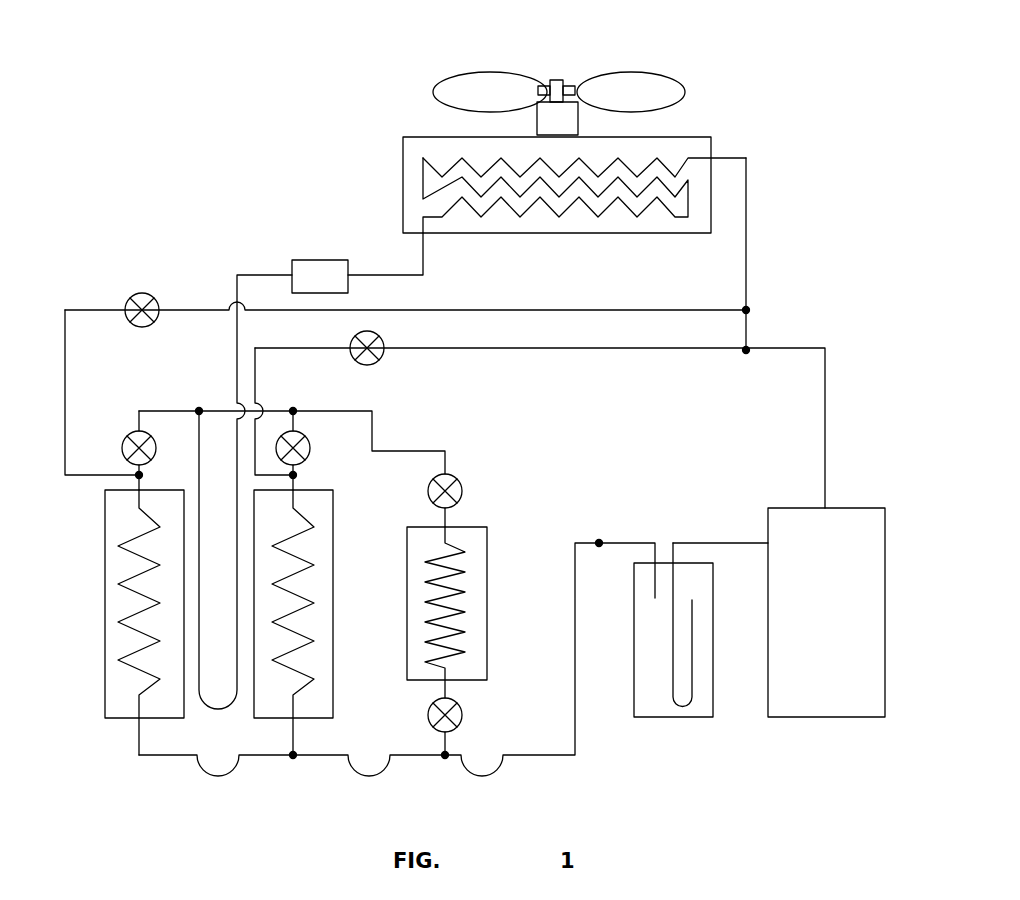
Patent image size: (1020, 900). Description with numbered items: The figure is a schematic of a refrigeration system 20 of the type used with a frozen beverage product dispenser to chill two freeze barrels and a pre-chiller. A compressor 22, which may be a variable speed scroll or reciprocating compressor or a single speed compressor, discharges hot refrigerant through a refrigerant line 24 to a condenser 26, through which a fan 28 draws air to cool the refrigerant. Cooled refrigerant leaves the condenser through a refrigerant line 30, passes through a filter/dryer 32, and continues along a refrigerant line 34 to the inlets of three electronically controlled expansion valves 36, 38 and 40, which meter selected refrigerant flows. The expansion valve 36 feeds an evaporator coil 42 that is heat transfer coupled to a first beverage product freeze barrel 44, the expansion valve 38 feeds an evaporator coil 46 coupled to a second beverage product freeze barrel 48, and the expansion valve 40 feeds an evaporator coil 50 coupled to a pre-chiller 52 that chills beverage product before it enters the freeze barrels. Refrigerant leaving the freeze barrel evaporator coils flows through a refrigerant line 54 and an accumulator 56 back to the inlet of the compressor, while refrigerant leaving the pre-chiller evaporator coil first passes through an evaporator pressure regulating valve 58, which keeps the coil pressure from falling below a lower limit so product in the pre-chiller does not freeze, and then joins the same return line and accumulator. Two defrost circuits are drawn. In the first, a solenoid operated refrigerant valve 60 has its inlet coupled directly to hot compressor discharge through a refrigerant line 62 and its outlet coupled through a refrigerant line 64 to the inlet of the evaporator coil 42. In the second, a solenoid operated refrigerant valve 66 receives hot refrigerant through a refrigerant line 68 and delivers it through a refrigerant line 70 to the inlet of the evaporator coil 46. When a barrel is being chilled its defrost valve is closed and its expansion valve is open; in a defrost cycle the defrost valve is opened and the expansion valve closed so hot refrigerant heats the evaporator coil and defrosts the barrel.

The refrigeration system 20 is at (290, 84).
The compressor 22 is at (837, 707).
The refrigerant line 24 is at (825, 412).
The condenser 26 is at (683, 147).
The fan 28 is at (590, 83).
The refrigerant line 30 is at (424, 265).
The filter/dryer 32 is at (323, 265).
The refrigerant line 34 is at (237, 275).
The expansion valve 36 is at (138, 432).
The expansion valve 38 is at (308, 450).
The expansion valve 40 is at (460, 490).
The evaporator coil 42 is at (122, 678).
The first beverage product freeze barrel 44 is at (110, 605).
The evaporator coil 46 is at (298, 596).
The second beverage product freeze barrel 48 is at (320, 626).
The evaporator coil 50 is at (455, 593).
The pre-chiller 52 is at (475, 653).
The refrigerant line 54 is at (548, 757).
The accumulator 56 is at (700, 707).
The evaporator pressure regulating valve 58 is at (462, 717).
The solenoid operated refrigerant valve 60 is at (146, 298).
The refrigerant line 62 is at (582, 310).
The refrigerant line 64 is at (65, 370).
The solenoid operated refrigerant valve 66 is at (368, 362).
The refrigerant line 68 is at (495, 350).
The refrigerant line 70 is at (255, 385).